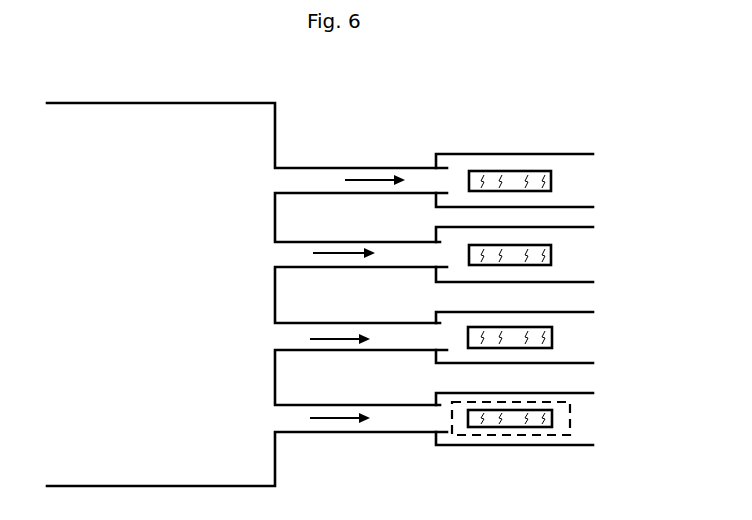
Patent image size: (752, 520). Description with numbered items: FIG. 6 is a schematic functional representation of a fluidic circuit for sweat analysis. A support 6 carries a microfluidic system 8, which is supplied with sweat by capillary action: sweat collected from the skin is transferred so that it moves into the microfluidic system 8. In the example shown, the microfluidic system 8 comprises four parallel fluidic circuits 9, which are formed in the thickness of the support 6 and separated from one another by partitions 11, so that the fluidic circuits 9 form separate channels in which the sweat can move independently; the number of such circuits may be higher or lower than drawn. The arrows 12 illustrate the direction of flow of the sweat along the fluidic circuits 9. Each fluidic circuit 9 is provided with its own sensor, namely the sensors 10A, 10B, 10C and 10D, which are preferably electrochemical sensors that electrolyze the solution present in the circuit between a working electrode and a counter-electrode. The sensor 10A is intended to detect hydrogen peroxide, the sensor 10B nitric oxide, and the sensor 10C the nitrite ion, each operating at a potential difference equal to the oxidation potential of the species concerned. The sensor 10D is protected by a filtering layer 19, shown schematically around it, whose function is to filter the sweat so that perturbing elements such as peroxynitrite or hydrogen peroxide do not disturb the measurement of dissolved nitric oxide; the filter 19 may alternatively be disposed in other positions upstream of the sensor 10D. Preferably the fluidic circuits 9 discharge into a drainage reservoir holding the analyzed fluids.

The support 6 is at (511, 305).
The microfluidic system 8 is at (247, 274).
The fluidic circuits 9 is at (345, 168).
The sensor 10A is at (515, 171).
The sensor 10B is at (537, 245).
The sensor 10C is at (540, 327).
The sensor 10D is at (478, 445).
The partitions 11 is at (305, 212).
The arrows 12 is at (375, 180).
The filtering layer 19 is at (540, 440).